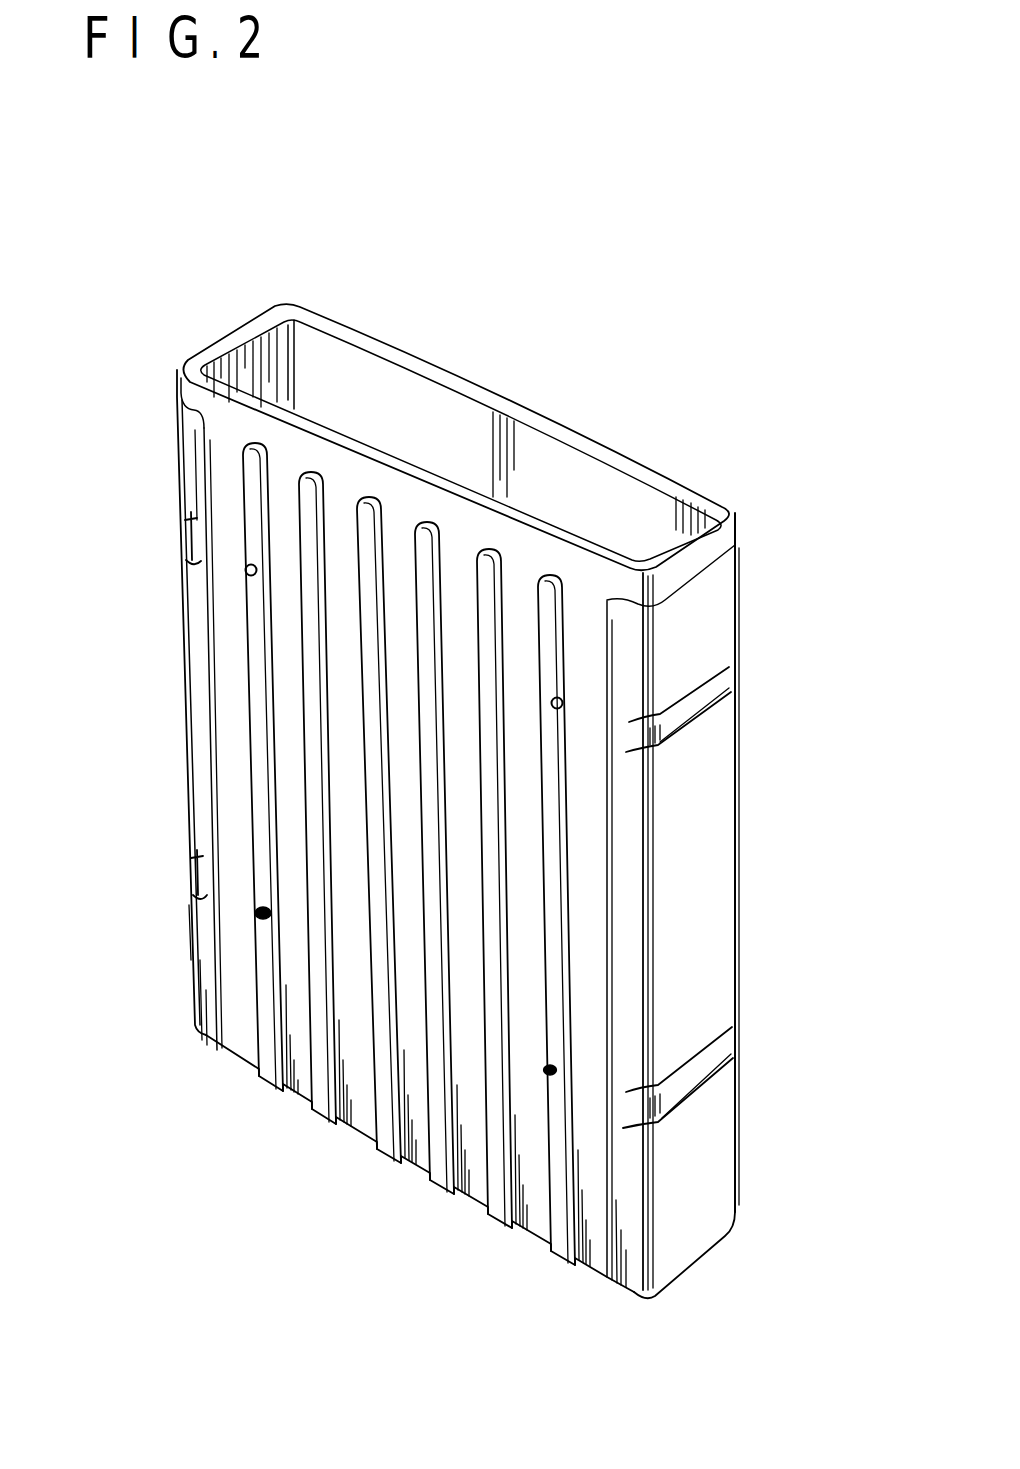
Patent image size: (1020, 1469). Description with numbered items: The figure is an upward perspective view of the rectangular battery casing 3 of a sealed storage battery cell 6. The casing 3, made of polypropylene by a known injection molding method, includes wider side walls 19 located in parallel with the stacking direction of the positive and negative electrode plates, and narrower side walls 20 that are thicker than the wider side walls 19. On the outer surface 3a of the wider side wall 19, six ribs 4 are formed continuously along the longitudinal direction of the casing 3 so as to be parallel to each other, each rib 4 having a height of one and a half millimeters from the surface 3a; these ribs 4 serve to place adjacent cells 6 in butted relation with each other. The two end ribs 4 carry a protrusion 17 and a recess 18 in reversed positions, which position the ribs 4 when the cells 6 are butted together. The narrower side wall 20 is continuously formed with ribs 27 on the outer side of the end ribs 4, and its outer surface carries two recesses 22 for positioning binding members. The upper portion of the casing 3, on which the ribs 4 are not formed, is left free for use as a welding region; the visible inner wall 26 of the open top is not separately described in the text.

The cell 6 is at (153, 456).
The battery casing 3 is at (228, 645).
The surface of the wider side wall 3a is at (290, 773).
The rib 4 is at (258, 734).
The protrusion 17 is at (245, 568).
The recess 18 is at (255, 914).
The wider side wall 19 is at (598, 441).
The narrower side wall 20 is at (210, 347).
The recess 22 is at (183, 544).
The inner wall 26 is at (346, 472).
The rib 27 is at (205, 1020).